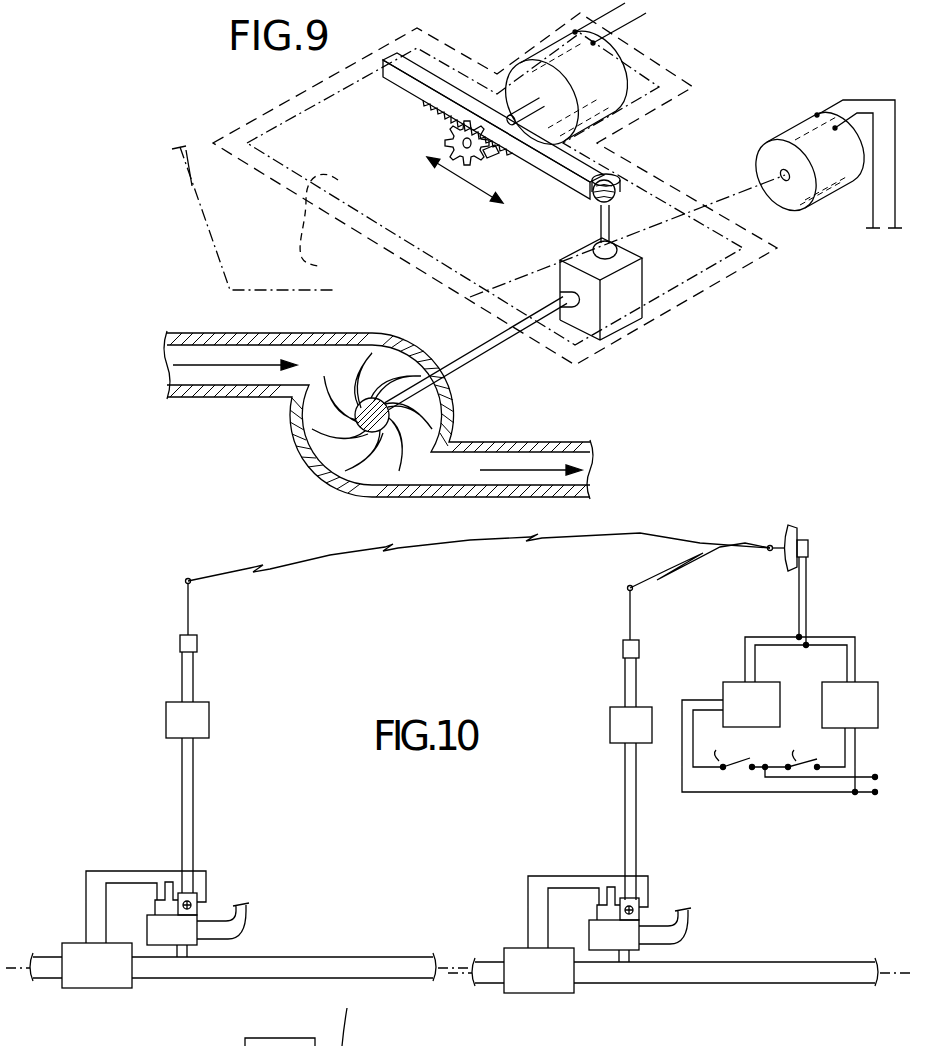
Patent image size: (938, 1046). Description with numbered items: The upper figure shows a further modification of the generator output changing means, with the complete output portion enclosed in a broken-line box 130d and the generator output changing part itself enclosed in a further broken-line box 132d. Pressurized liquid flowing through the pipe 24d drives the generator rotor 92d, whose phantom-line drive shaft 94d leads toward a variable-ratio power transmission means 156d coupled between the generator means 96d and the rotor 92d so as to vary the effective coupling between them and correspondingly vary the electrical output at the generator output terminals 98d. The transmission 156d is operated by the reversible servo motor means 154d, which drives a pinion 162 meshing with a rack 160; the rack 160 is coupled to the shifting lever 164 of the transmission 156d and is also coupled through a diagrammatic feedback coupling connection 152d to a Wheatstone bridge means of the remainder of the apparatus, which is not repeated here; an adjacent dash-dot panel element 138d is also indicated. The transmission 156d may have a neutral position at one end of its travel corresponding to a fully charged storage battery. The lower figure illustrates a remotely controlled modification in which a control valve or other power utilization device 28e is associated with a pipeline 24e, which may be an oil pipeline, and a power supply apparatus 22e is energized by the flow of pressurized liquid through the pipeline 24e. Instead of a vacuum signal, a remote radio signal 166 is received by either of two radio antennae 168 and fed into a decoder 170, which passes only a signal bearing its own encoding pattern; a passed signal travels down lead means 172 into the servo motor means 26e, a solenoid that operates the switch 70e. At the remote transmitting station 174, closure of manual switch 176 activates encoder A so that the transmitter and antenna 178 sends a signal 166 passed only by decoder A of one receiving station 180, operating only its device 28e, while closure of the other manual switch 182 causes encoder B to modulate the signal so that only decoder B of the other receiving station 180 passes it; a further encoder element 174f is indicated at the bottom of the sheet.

In FIG. 9, the complete output portion 130d is at (266, 112).
In FIG. 9, the generator output changing part 132d is at (331, 226).
In FIG. 9, the panel 138d is at (182, 185).
In FIG. 9, the feedback coupling connection 152d is at (203, 231).
In FIG. 9, the pipe 24d is at (198, 333).
In FIG. 9, the generator rotor 92d is at (437, 408).
In FIG. 9, the drive shaft 94d is at (470, 349).
In FIG. 9, the variable-ratio power transmission means 156d is at (618, 324).
In FIG. 9, the rack 160 is at (430, 102).
In FIG. 9, the pinion 162 is at (497, 163).
In FIG. 9, the shifting lever 164 is at (602, 208).
In FIG. 9, the servo motor means 154d is at (624, 92).
In FIG. 9, the generator means 96d is at (828, 215).
In FIG. 9, the generator output terminals 98d is at (818, 113).
In FIG. 10, the radio signal 166 is at (430, 552).
In FIG. 10, the radio antennae 168 is at (190, 606).
In FIG. 10, the decoder 170 is at (167, 722).
In FIG. 10, the lead means 172 is at (198, 803).
In FIG. 10, the remote transmitting station 174 is at (839, 676).
In FIG. 10, the manual switch 176 is at (717, 760).
In FIG. 10, the transmitter and antenna 178 is at (806, 515).
In FIG. 10, the remote receiving station 180 is at (170, 676).
In FIG. 10, the manual switch 182 is at (794, 758).
In FIG. 10, the power supply apparatus 22e is at (88, 996).
In FIG. 10, the pipeline 24e is at (305, 957).
In FIG. 10, the servo motor means 26e is at (210, 910).
In FIG. 10, the control valve 28e is at (133, 922).
In FIG. 10, the switch 70e is at (188, 958).
In FIG. 10, the encoder 174f is at (328, 1035).